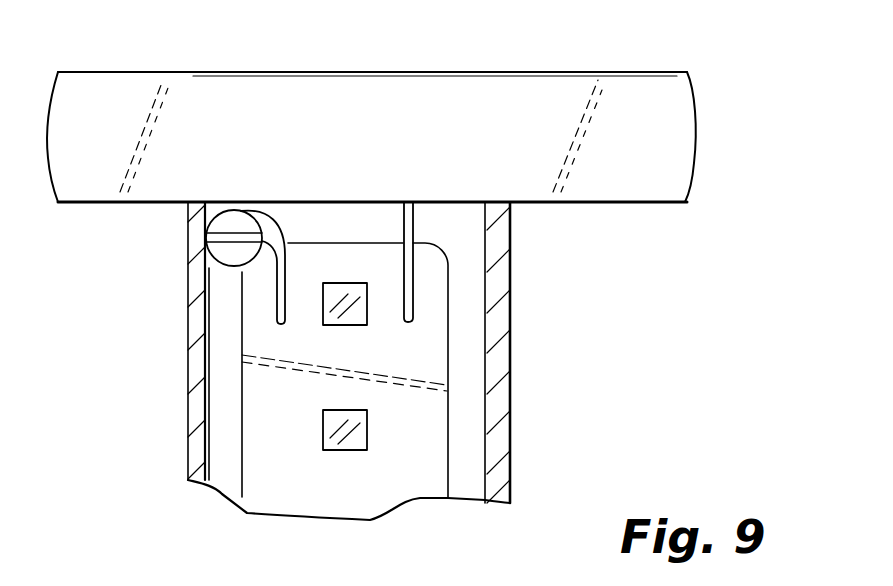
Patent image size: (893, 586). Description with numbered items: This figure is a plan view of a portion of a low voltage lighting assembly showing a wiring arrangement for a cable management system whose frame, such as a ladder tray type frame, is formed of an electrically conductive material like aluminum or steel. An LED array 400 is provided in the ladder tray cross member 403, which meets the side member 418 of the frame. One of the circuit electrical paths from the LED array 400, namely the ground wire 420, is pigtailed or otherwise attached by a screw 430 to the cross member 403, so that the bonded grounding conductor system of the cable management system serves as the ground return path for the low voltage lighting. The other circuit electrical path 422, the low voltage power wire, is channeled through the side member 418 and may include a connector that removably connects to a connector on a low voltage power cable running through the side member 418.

The side member 418 is at (618, 83).
The cross member 403 is at (508, 378).
The LED array 400 is at (425, 430).
The screw 430 is at (231, 226).
The ground wire 420 is at (288, 275).
The other circuit electrical path 422 is at (413, 226).